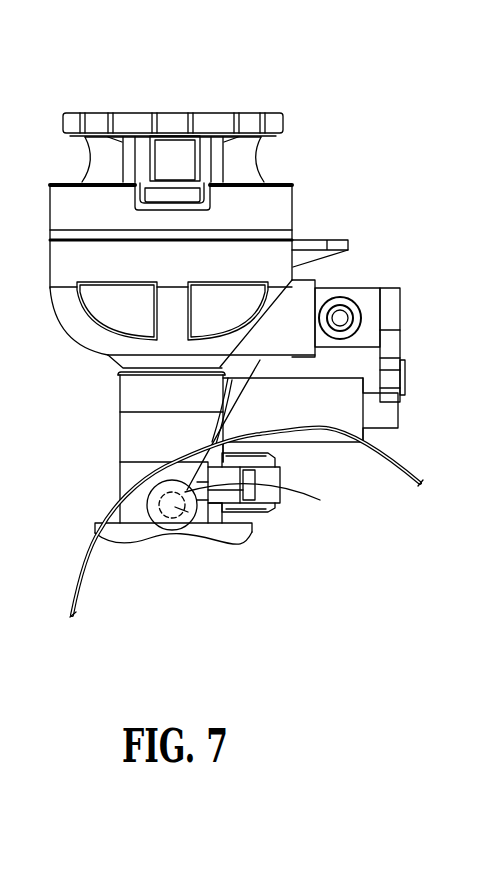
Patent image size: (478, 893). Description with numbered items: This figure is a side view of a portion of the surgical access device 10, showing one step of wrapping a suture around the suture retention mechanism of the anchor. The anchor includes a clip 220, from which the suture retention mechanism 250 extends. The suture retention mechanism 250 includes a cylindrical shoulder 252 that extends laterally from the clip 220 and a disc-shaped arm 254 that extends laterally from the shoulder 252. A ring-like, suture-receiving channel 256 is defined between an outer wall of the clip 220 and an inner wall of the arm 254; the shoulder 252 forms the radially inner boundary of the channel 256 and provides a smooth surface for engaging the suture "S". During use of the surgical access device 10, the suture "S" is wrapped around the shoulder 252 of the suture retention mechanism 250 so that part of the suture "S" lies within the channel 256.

The surgical access device 10 is at (242, 97).
The clip 220 is at (132, 475).
The suture retention mechanism 250 is at (260, 360).
The cylindrical shoulder 252 is at (238, 535).
The disc-shaped arm 254 is at (283, 482).
The suture-receiving channel 256 is at (150, 520).
The suture S is at (393, 463).